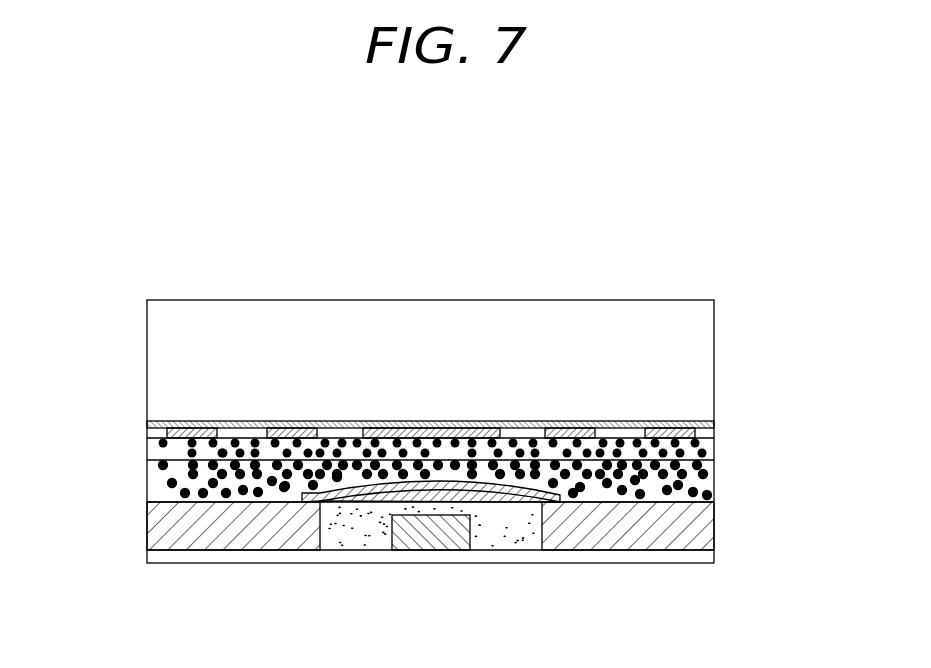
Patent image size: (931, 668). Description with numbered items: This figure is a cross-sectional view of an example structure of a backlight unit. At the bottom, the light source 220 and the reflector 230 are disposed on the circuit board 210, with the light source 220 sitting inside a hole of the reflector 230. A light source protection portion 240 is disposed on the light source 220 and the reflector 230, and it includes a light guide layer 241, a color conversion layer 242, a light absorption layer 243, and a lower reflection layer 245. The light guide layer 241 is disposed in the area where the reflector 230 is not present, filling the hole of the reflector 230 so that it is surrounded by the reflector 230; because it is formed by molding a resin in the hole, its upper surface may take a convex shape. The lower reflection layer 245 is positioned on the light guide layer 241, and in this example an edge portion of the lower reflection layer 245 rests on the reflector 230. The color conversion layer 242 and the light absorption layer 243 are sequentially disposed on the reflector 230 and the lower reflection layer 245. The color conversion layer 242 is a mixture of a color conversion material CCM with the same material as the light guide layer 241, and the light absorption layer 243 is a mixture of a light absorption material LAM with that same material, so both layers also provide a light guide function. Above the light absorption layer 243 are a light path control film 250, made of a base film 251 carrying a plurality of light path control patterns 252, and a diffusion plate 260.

The circuit board 210 is at (157, 555).
The light source 220 is at (430, 538).
The reflector 230 is at (153, 522).
The light source protection portion 240 is at (500, 485).
The light guide layer 241 is at (527, 535).
The color conversion layer 242 is at (708, 465).
The light absorption layer 243 is at (708, 446).
The lower reflection layer 245 is at (560, 498).
The light path control film 250 is at (366, 434).
The base film 251 is at (147, 423).
The light path control patterns 252 is at (182, 438).
The diffusion plate 260 is at (157, 365).
The light absorption material LAM is at (223, 458).
The color conversion material CCM is at (285, 491).